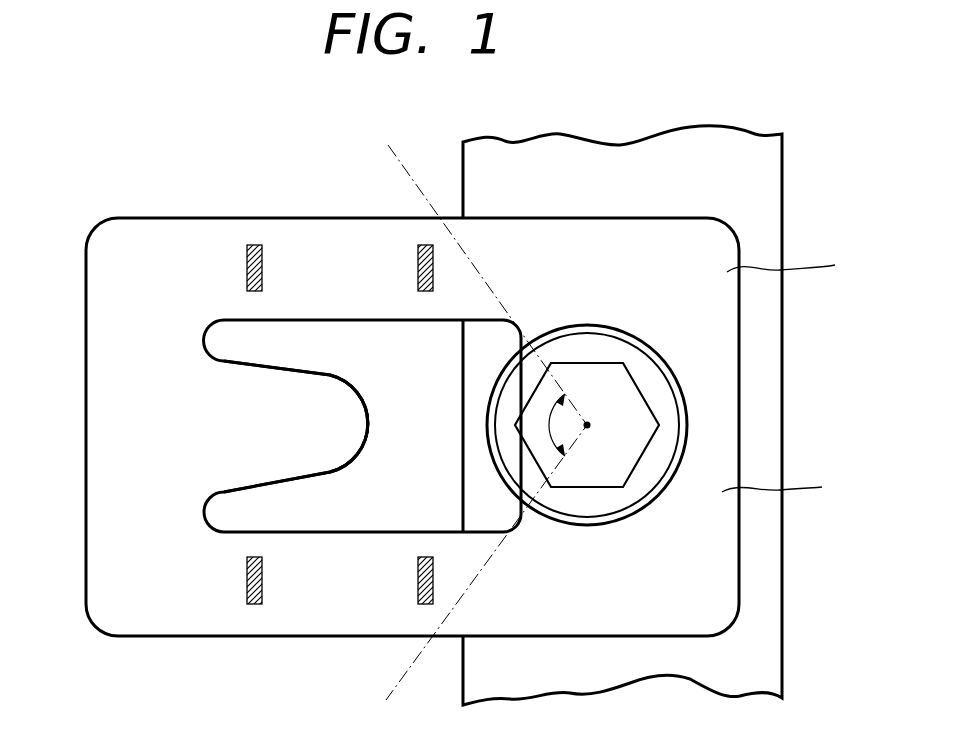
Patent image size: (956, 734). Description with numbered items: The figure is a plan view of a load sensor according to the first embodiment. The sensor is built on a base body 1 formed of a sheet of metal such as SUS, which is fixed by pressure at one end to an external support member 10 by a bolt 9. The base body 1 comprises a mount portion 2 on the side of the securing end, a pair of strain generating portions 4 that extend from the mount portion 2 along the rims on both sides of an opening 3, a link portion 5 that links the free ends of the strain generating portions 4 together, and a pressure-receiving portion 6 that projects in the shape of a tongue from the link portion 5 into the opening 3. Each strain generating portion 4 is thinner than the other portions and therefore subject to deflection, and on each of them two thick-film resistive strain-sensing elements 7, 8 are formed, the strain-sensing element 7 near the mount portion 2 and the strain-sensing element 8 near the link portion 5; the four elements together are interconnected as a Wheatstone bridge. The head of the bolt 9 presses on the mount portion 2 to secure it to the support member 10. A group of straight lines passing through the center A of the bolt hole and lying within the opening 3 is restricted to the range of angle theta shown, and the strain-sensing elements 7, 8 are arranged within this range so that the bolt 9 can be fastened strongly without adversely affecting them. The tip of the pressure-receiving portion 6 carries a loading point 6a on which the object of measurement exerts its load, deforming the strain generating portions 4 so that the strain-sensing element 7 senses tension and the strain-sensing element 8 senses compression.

The base body 1 is at (862, 275).
The mount portion 2 is at (782, 487).
The opening 3 is at (366, 532).
The strain generating portions 4 is at (325, 242).
The link portion 5 is at (107, 498).
The pressure-receiving portion 6 is at (333, 385).
The loading point 6a is at (372, 422).
The strain-sensing element 7 is at (418, 262).
The strain-sensing element 8 is at (252, 245).
The bolt 9 is at (658, 385).
The support member 10 is at (760, 177).
The center of the screw hole A is at (589, 422).